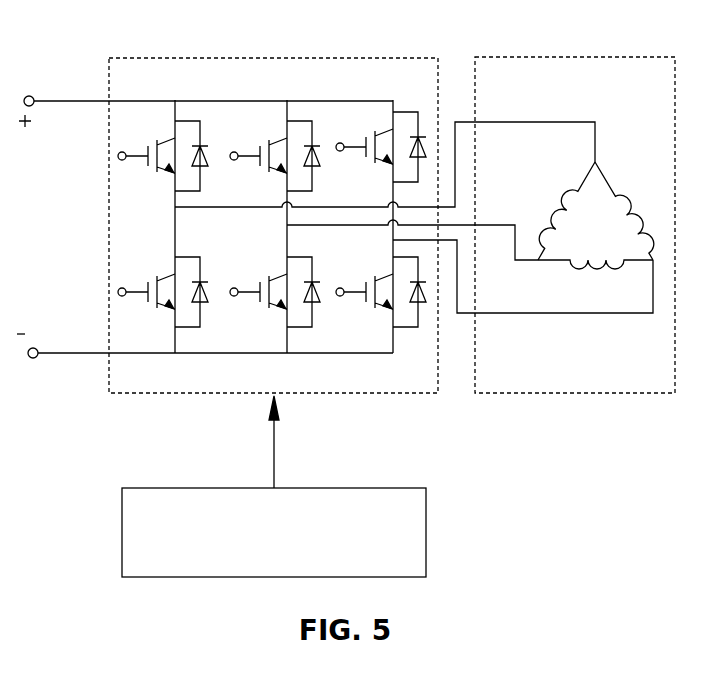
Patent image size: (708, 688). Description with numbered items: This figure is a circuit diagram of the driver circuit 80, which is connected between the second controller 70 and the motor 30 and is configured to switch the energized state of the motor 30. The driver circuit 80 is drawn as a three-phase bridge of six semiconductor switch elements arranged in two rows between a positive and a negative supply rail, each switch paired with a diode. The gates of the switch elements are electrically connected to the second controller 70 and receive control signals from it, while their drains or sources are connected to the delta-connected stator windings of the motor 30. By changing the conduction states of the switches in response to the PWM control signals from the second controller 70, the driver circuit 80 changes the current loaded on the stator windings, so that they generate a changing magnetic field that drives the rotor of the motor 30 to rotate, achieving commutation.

The driver circuit 80 is at (272, 57).
The motor 30 is at (572, 57).
The second controller 70 is at (300, 488).